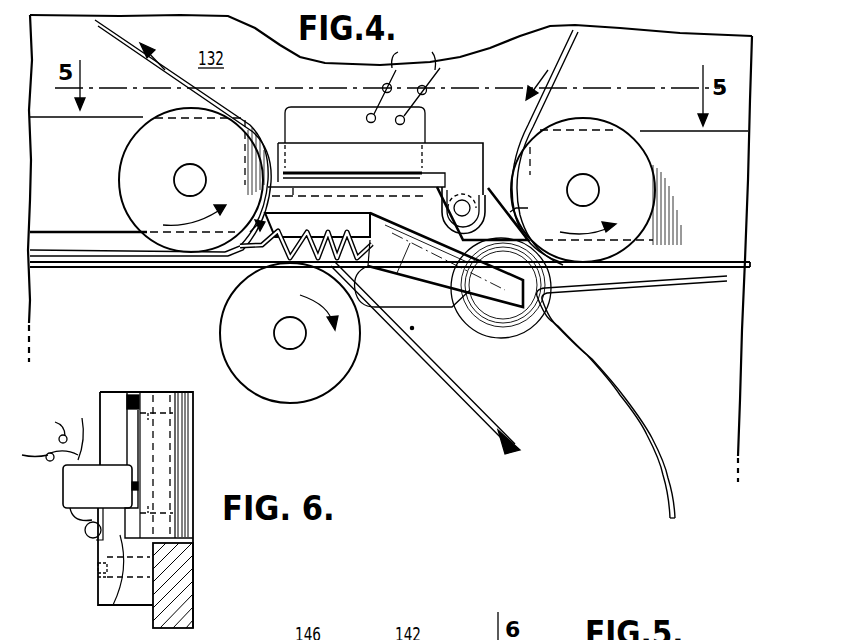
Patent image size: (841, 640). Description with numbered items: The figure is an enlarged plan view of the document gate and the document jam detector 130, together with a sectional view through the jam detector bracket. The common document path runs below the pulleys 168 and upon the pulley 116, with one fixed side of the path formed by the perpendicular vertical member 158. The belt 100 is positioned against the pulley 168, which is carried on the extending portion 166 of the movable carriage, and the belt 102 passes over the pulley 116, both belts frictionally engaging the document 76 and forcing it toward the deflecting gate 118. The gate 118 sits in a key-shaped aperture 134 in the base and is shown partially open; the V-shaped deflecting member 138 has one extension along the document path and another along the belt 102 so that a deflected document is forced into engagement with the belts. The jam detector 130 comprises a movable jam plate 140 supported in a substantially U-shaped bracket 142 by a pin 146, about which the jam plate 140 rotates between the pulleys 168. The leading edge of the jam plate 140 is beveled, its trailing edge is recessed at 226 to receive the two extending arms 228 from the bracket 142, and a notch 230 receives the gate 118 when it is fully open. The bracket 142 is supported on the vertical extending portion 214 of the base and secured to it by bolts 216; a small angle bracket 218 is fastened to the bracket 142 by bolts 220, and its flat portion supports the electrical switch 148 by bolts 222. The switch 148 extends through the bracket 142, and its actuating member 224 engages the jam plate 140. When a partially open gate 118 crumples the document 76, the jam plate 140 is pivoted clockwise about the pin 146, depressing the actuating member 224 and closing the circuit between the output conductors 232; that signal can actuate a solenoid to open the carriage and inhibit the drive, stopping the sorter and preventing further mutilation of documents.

In FIG. 4, the document 76 is at (297, 268).
In FIG. 4, the belt 100 is at (152, 75).
In FIG. 4, the belt 102 is at (432, 362).
In FIG. 4, the pulley 116 is at (306, 385).
In FIG. 4, the deflecting gate 118 is at (437, 287).
In FIG. 4, the document jam detector 130 is at (258, 226).
In FIG. 4, the key-shaped aperture 134 is at (512, 333).
In FIG. 4, the V-shaped deflecting member 138 is at (640, 433).
In FIG. 4, the jam plate 140 is at (372, 190).
In FIG. 6, the jam plate 140 is at (187, 440).
In FIG. 4, the bracket 142 is at (436, 152).
In FIG. 6, the bracket 142 is at (108, 407).
In FIG. 4, the pin 146 is at (532, 206).
In FIG. 6, the pin 146 is at (163, 467).
In FIG. 4, the electrical switch 148 is at (330, 117).
In FIG. 6, the electrical switch 148 is at (63, 490).
In FIG. 4, the perpendicular vertical member 158 is at (80, 268).
In FIG. 4, the extending portion 166 is at (660, 137).
In FIG. 4, the pulley 168 is at (135, 171).
In FIG. 4, the vertical extending portion 214 is at (352, 160).
In FIG. 6, the vertical extending portion 214 is at (182, 605).
In FIG. 6, the bolts 216 is at (98, 578).
In FIG. 6, the angle bracket 218 is at (70, 515).
In FIG. 6, the bolts 220 is at (98, 568).
In FIG. 6, the bolts 222 is at (77, 527).
In FIG. 4, the actuating member 224 is at (328, 182).
In FIG. 6, the actuating member 224 is at (132, 485).
In FIG. 4, the recess 226 is at (437, 198).
In FIG. 6, the recess 226 is at (162, 397).
In FIG. 4, the extending arms 228 is at (484, 175).
In FIG. 6, the extending arms 228 is at (131, 395).
In FIG. 4, the notch 230 is at (370, 220).
In FIG. 4, the output conductors 232 is at (404, 83).
In FIG. 6, the output conductors 232 is at (52, 436).